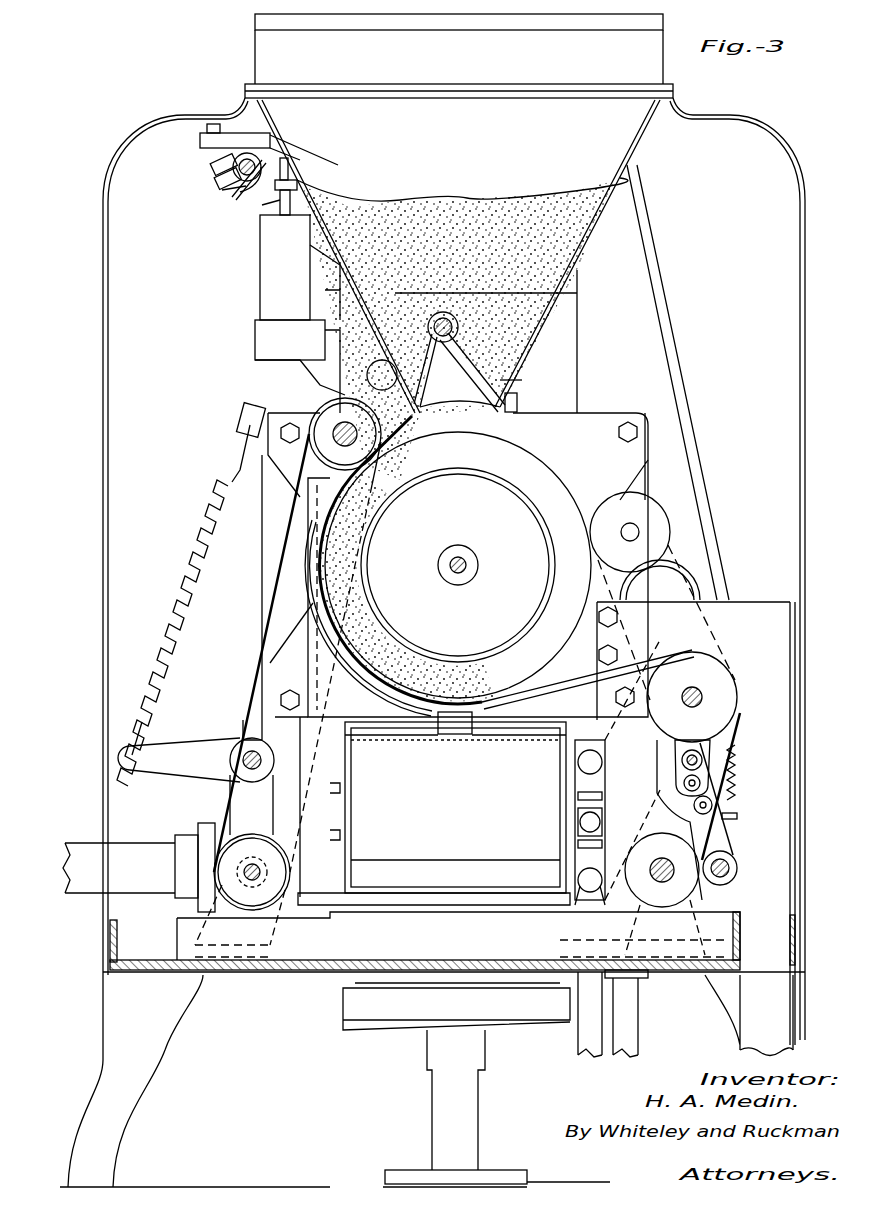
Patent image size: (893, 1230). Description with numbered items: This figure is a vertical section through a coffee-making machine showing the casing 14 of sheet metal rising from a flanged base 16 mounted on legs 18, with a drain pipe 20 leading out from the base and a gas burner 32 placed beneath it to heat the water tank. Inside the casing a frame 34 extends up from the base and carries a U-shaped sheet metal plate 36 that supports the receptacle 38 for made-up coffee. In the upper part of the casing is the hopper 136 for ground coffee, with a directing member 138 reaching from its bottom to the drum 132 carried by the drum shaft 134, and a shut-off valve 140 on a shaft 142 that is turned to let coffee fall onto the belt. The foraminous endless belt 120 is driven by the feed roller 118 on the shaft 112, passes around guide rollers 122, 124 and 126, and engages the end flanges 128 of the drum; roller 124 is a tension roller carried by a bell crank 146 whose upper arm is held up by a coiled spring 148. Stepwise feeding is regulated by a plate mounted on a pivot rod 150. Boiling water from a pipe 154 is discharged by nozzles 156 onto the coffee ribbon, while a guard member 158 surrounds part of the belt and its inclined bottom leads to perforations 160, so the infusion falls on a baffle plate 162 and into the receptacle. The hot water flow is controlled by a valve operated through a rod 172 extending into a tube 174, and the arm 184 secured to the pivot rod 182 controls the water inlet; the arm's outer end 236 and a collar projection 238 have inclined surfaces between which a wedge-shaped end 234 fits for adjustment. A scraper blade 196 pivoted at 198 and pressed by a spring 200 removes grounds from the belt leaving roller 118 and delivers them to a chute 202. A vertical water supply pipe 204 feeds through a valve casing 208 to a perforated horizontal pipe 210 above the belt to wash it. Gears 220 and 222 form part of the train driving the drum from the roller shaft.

The casing 14 is at (106, 578).
The base 16 is at (268, 970).
The legs 18 is at (162, 1044).
The drain pipe 20 is at (632, 1032).
The gas burner 32 is at (370, 1020).
The frame 34 is at (262, 715).
The sheet metal plate 36 is at (372, 906).
The receptacle 38 is at (470, 884).
The shaft 112 is at (702, 694).
The feed roller 118 is at (712, 666).
The endless belt 120 is at (258, 635).
The guide roller 122 is at (695, 958).
The tension roller 124 is at (272, 893).
The guide roller 126 is at (330, 425).
The end flanges 128 is at (515, 440).
The drum 132 is at (543, 485).
The drum shaft 134 is at (468, 562).
The hopper 136 is at (632, 146).
The directing member 138 is at (502, 470).
The shut-off valve 140 is at (515, 369).
The valve shaft 142 is at (428, 327).
The bell crank 146 is at (205, 768).
The coiled spring 148 is at (198, 538).
The pivot rod 150 is at (680, 762).
The pipe 154 is at (380, 373).
The nozzles 156 is at (405, 445).
The guard member 158 is at (330, 690).
The perforations 160 is at (457, 735).
The baffle plate 162 is at (515, 745).
The rod 172 is at (278, 207).
The tube 174 is at (268, 258).
The pivot rod 182 is at (222, 152).
The arm 184 is at (262, 197).
The scraper blade 196 is at (743, 722).
The pivot 198 is at (714, 806).
The spring 200 is at (738, 768).
The chute 202 is at (778, 860).
The vertical water supply pipe 204 is at (580, 1040).
The valve casing 208 is at (604, 820).
The horizontal pipe 210 is at (585, 890).
The gear 220 is at (690, 575).
The gear 222 is at (665, 512).
The wedge-shaped end 234 is at (222, 190).
The outer end of arm 236 is at (214, 178).
The projection 238 is at (228, 198).